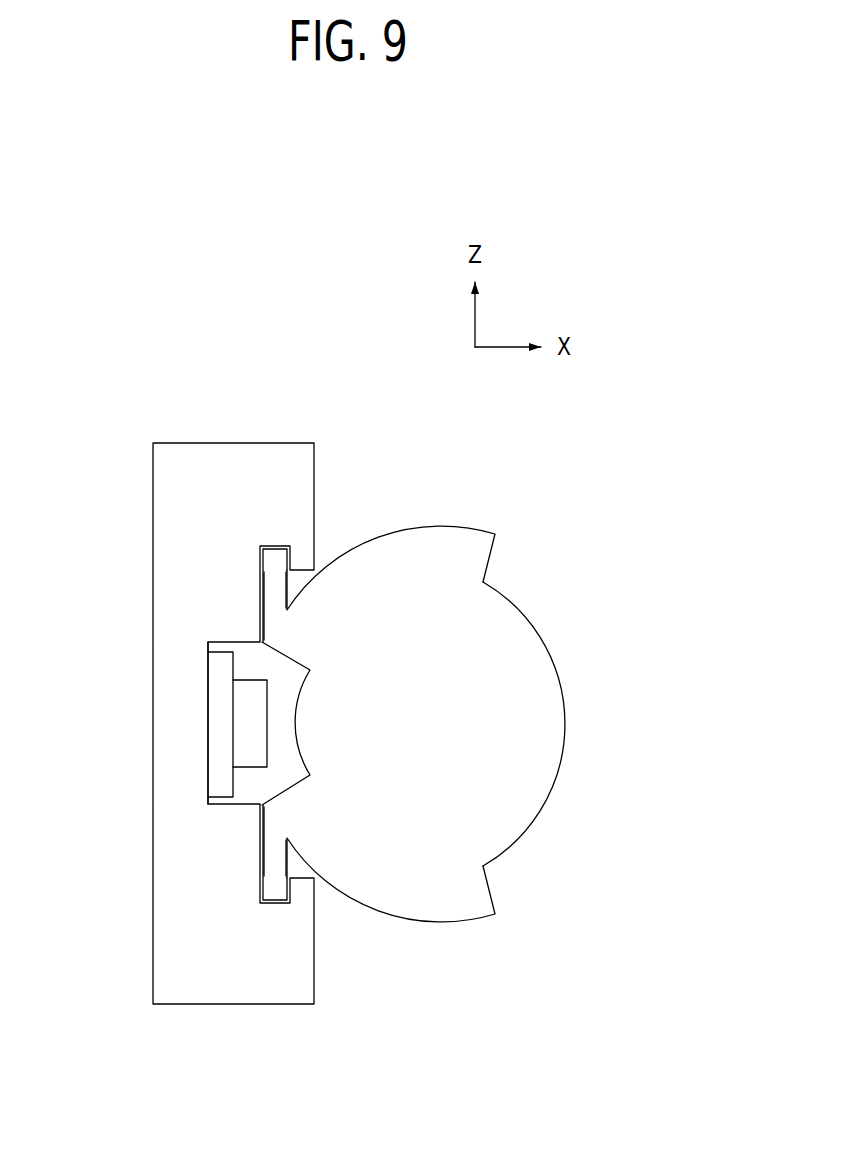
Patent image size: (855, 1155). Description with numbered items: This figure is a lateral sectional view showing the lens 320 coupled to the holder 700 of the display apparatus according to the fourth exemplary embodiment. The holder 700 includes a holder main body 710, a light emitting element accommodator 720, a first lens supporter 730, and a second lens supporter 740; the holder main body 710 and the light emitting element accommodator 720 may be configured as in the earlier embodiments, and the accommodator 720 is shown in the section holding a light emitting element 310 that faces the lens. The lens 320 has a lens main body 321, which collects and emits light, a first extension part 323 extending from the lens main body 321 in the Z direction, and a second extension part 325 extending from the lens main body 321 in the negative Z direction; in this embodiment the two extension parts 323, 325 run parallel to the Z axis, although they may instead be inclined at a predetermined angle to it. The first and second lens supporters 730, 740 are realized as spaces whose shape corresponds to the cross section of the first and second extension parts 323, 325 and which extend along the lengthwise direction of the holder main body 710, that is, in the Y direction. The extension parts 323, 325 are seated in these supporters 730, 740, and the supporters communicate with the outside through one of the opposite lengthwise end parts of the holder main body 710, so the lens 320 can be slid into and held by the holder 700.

The holder 700 is at (172, 421).
The holder main body 710 is at (167, 460).
The light emitting element accommodator 720 is at (208, 760).
The first lens supporter 730 is at (257, 557).
The second lens supporter 740 is at (257, 890).
The light source 310 is at (211, 698).
The lens 320 is at (354, 724).
The lens main body 321 is at (562, 724).
The first extension part 323 is at (272, 575).
The second extension part 325 is at (272, 868).